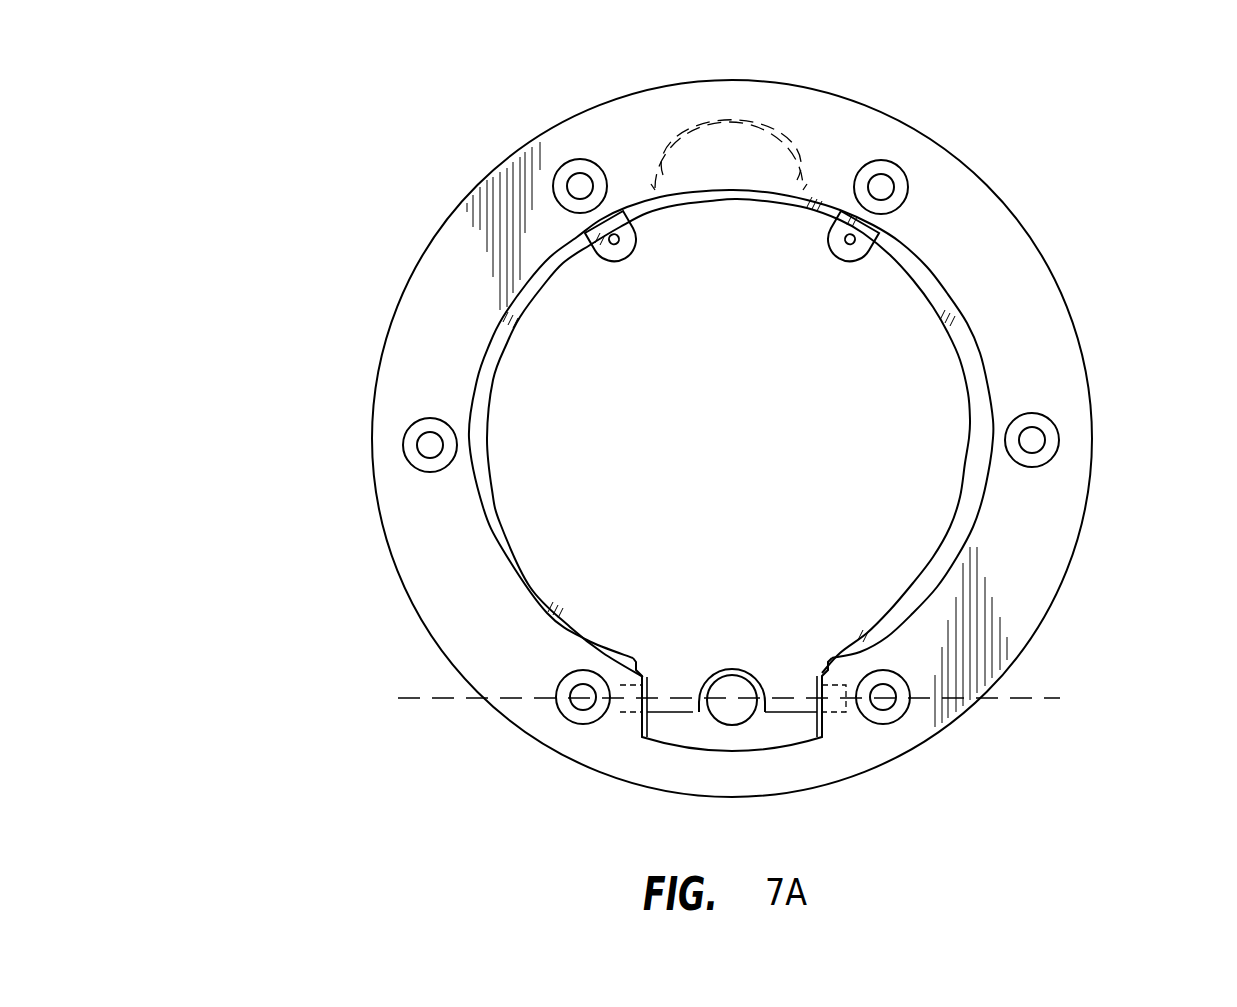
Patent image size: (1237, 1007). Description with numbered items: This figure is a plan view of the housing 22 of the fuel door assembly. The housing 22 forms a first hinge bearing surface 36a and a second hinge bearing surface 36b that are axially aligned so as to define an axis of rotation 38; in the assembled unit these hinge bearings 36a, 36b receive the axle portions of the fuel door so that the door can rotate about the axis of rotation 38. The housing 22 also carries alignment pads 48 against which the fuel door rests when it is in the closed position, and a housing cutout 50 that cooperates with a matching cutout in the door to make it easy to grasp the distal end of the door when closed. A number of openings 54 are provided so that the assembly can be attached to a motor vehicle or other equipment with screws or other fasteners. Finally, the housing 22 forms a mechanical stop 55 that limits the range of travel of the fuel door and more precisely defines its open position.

The housing 22 is at (432, 157).
The first hinge bearing surface 36a is at (625, 713).
The second hinge bearing surface 36b is at (840, 713).
The axis of rotation 38 is at (1048, 698).
The alignment pads 48 is at (617, 246).
The housing cutout 50 is at (770, 137).
The openings 54 is at (1057, 430).
The mechanical stop 55 is at (735, 752).